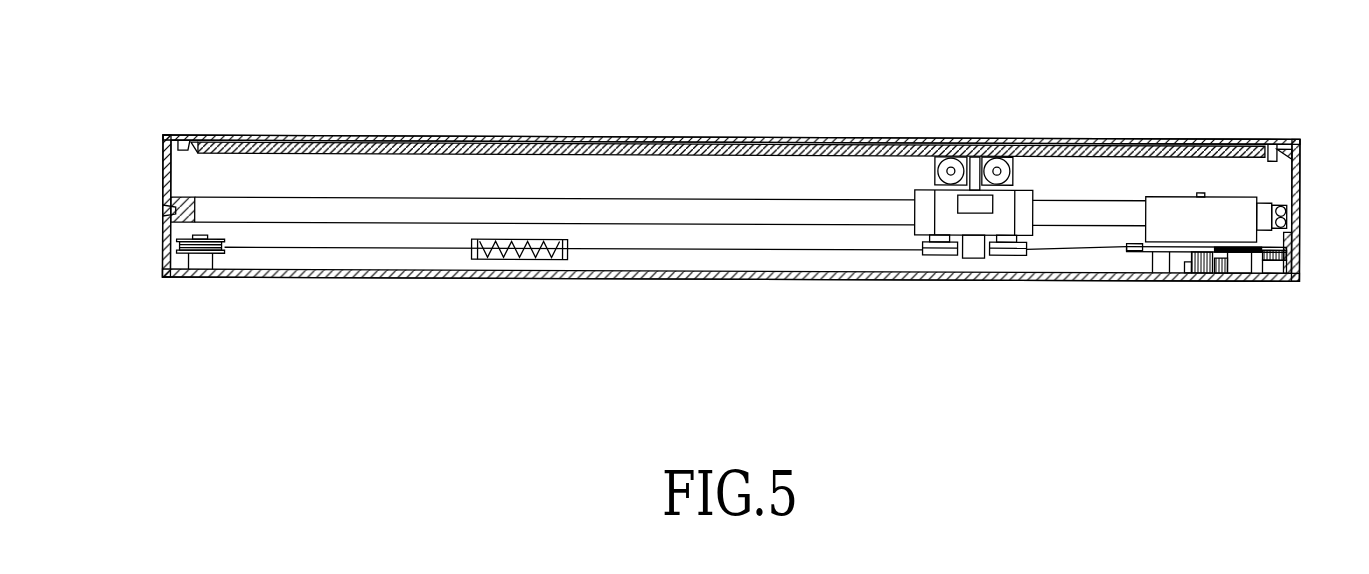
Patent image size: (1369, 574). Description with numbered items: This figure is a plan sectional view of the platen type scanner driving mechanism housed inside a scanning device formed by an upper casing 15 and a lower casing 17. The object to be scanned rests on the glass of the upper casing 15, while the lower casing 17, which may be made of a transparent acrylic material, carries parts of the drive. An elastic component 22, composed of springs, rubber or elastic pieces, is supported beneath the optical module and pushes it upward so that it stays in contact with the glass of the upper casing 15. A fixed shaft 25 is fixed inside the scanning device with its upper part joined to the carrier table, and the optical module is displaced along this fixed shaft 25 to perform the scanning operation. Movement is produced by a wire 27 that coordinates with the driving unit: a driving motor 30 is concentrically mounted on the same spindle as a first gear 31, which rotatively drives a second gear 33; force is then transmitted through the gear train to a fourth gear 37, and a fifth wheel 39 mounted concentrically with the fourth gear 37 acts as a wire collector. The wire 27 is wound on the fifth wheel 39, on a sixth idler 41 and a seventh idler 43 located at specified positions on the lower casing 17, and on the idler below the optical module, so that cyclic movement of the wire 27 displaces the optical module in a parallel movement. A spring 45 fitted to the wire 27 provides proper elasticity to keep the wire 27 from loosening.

The upper casing 15 is at (1226, 138).
The lower casing 17 is at (165, 280).
The elastic component 22 is at (996, 157).
The fixed shaft 25 is at (607, 199).
The wire 27 is at (716, 250).
The driving motor 30 is at (1175, 203).
The first gear 31 is at (1192, 278).
The second gear 33 is at (1221, 278).
The fourth gear 37 is at (1301, 262).
The fifth wheel 39 is at (1301, 215).
The sixth idler 41 is at (1301, 253).
The seventh idler 43 is at (168, 252).
The spring 45 is at (512, 258).